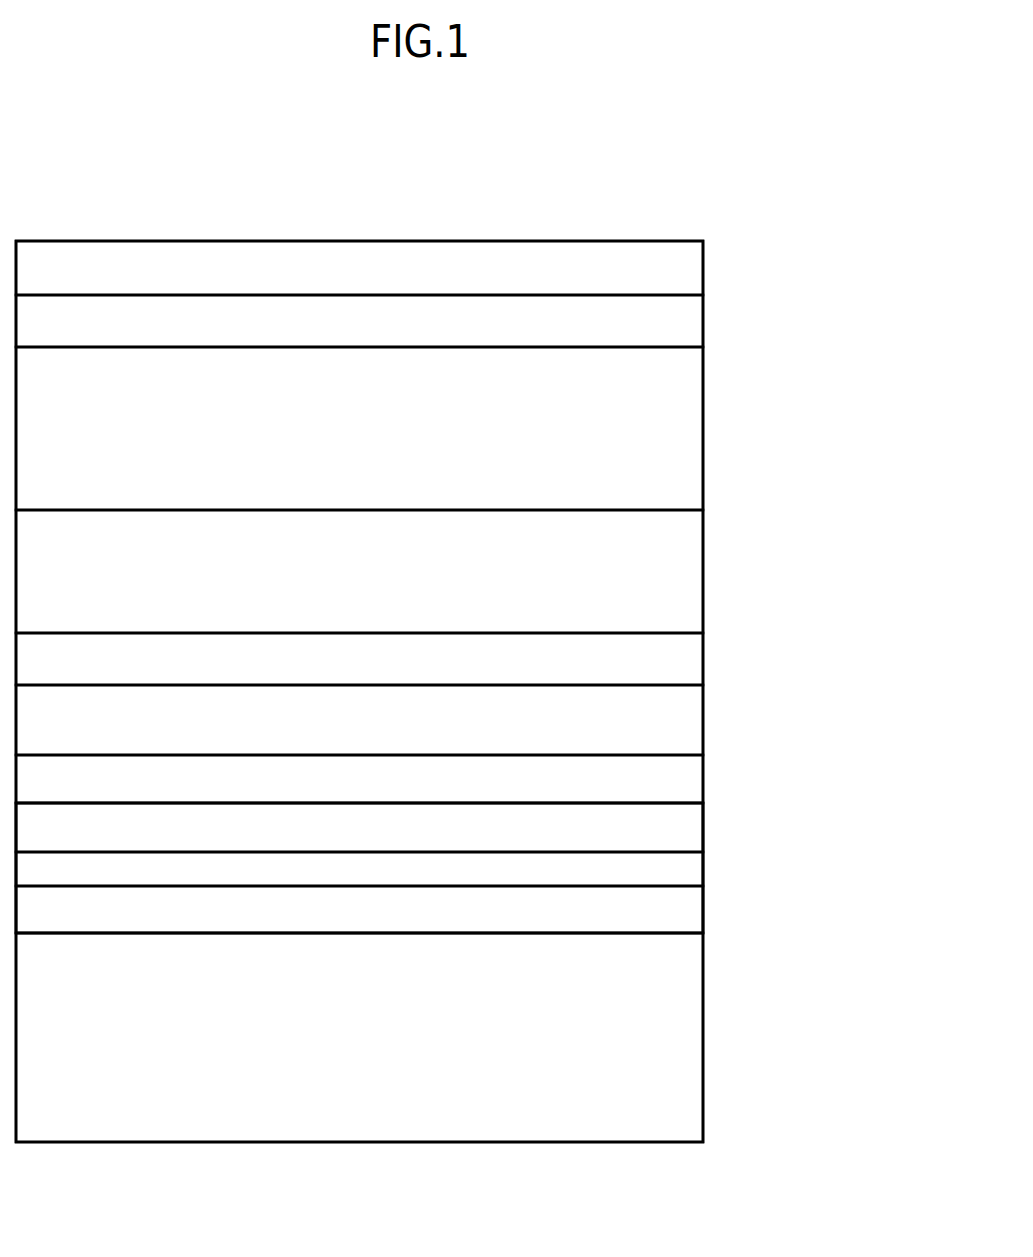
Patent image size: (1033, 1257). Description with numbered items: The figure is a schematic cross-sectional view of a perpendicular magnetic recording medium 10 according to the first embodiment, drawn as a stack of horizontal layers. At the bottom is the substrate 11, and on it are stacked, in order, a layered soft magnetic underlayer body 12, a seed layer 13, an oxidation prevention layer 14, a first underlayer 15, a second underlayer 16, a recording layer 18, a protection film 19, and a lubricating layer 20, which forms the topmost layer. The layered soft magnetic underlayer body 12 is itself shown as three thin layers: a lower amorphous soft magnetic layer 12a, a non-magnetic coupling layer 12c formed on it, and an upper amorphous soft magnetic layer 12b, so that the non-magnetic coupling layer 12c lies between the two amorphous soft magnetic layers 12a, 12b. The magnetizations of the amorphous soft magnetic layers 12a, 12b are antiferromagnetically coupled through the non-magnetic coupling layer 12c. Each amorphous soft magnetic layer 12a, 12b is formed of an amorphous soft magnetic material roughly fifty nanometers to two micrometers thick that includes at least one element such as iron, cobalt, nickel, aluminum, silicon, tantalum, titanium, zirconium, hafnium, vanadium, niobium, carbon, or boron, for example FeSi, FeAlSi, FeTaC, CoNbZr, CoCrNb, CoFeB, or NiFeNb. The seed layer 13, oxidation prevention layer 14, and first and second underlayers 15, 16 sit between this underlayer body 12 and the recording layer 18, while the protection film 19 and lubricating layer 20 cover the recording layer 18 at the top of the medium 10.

The perpendicular magnetic recording medium 10 is at (94, 139).
The substrate 11 is at (703, 1030).
The layered soft magnetic underlayer body 12 is at (837, 817).
The amorphous soft magnetic layer 12a is at (703, 907).
The amorphous soft magnetic layer 12b is at (703, 830).
The non-magnetic coupling layer 12c is at (703, 867).
The seed layer 13 is at (703, 780).
The oxidation prevention layer 14 is at (703, 720).
The first underlayer 15 is at (703, 648).
The second underlayer 16 is at (703, 568).
The recording layer 18 is at (703, 415).
The protection film 19 is at (703, 323).
The lubricating layer 20 is at (703, 260).